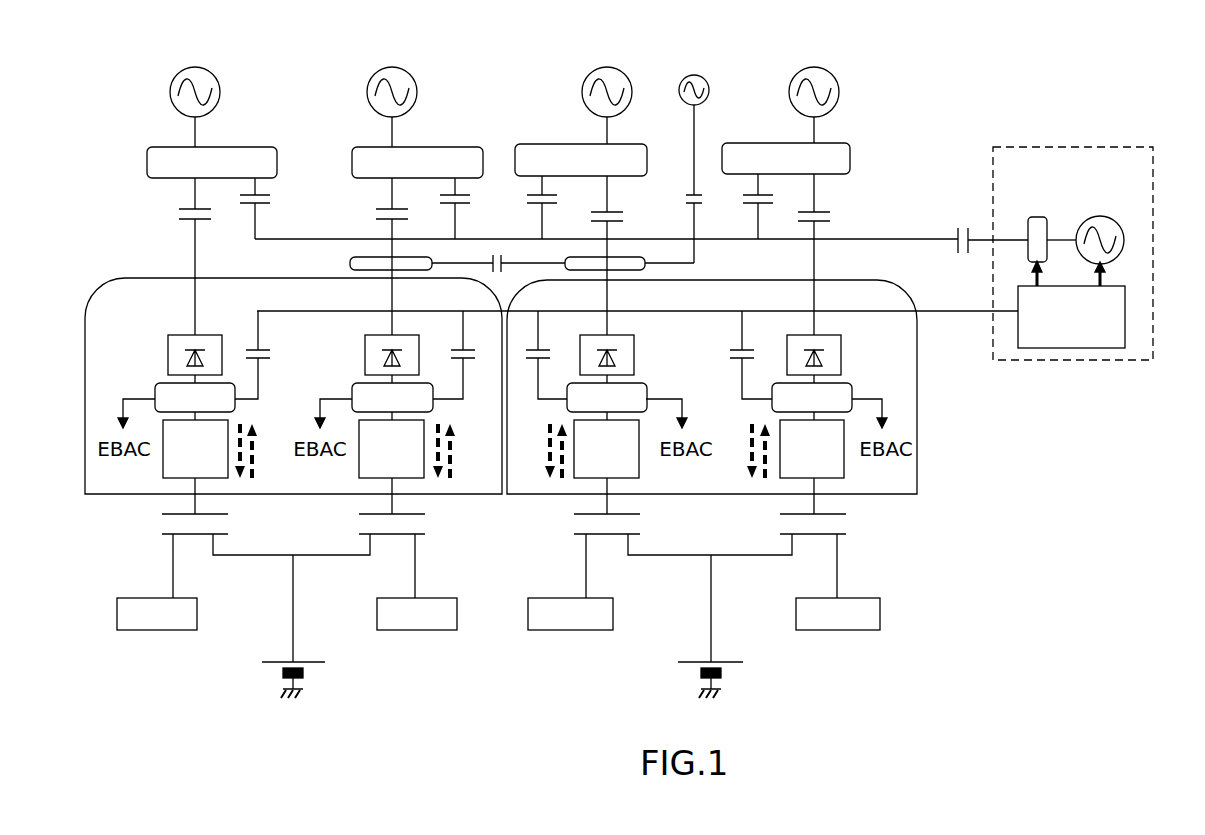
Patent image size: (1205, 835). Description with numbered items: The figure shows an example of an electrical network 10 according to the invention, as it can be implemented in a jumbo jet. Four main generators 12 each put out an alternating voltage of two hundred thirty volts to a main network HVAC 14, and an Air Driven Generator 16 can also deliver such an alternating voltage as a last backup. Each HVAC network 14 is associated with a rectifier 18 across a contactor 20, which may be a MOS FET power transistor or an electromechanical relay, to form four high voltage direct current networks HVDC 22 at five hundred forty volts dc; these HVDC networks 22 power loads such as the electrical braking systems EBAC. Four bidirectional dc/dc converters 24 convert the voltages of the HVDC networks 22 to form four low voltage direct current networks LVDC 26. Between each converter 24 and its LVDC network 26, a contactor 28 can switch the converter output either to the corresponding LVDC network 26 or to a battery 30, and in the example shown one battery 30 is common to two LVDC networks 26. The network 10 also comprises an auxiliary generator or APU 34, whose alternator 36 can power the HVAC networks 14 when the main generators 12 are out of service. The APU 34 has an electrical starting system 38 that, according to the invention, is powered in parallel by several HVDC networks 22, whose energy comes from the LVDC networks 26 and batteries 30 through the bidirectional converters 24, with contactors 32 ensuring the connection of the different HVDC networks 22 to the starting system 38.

The electrical network 10 is at (1005, 538).
The main generator 12 is at (212, 77).
The main network HVAC 14 is at (152, 147).
The Air Driven Generator (ADG) 16 is at (706, 82).
The rectifier 18 is at (170, 357).
The contactor 20 is at (178, 212).
The high voltage direct current network HVDC 22 is at (155, 392).
The dc/dc converter 24 is at (170, 462).
The low voltage direct current network LVDC 26 is at (135, 598).
The contactor 28 is at (222, 528).
The battery 30 is at (315, 678).
The contactor 32 is at (258, 342).
The auxiliary generator (APU) 34 is at (1085, 360).
The alternator 36 is at (1122, 224).
The electrical starting system 38 is at (1125, 302).